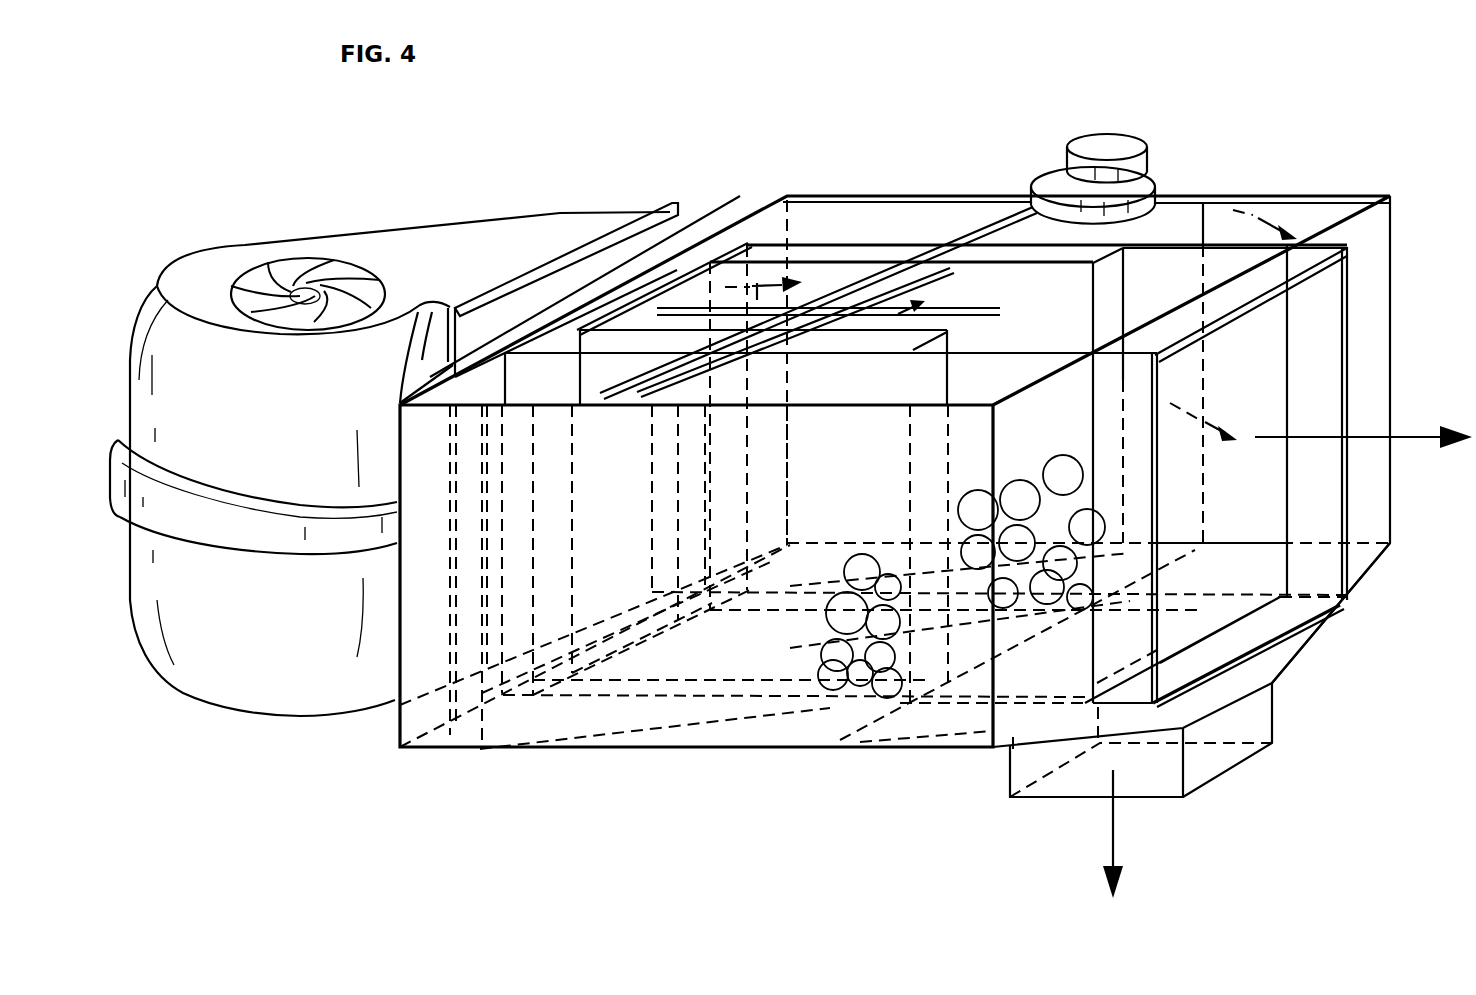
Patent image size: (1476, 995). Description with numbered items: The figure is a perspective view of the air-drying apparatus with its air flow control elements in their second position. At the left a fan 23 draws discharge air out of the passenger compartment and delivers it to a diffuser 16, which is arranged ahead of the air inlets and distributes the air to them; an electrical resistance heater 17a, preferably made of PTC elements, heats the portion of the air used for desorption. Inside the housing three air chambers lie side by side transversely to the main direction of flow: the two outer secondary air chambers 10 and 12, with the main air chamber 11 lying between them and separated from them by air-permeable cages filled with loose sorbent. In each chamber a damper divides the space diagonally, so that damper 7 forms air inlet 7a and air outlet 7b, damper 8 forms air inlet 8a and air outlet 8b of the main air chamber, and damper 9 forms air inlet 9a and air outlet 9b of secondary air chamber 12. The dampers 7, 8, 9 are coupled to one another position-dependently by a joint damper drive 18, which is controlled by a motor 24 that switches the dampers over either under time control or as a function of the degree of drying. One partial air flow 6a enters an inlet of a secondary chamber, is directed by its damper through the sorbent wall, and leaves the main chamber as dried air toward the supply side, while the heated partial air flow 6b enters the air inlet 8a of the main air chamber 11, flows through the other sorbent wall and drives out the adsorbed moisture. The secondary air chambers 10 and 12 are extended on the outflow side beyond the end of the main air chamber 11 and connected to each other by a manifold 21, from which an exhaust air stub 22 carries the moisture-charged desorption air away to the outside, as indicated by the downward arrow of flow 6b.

The partial air flow 6a is at (887, 387).
The partial air flow 6b is at (770, 392).
The damper 7 is at (832, 392).
The air inlet 7a is at (410, 382).
The air outlet 7b is at (1003, 392).
The damper 8 is at (1077, 288).
The air inlet 8a is at (680, 270).
The air outlet 8b is at (1177, 277).
The damper 9 is at (912, 228).
The air inlet 9a is at (807, 227).
The air outlet 9b is at (1287, 213).
The secondary air chamber 10 is at (975, 388).
The main air chamber 11 is at (833, 282).
The secondary air chamber 12 is at (1308, 232).
The diffuser 16 is at (717, 222).
The electrical resistance heater 17a is at (615, 300).
The damper drive 18 is at (955, 227).
The manifold 21 is at (1300, 636).
The exhaust air stub 22 is at (1217, 767).
The fan 23 is at (318, 246).
The motor 24 is at (1127, 143).